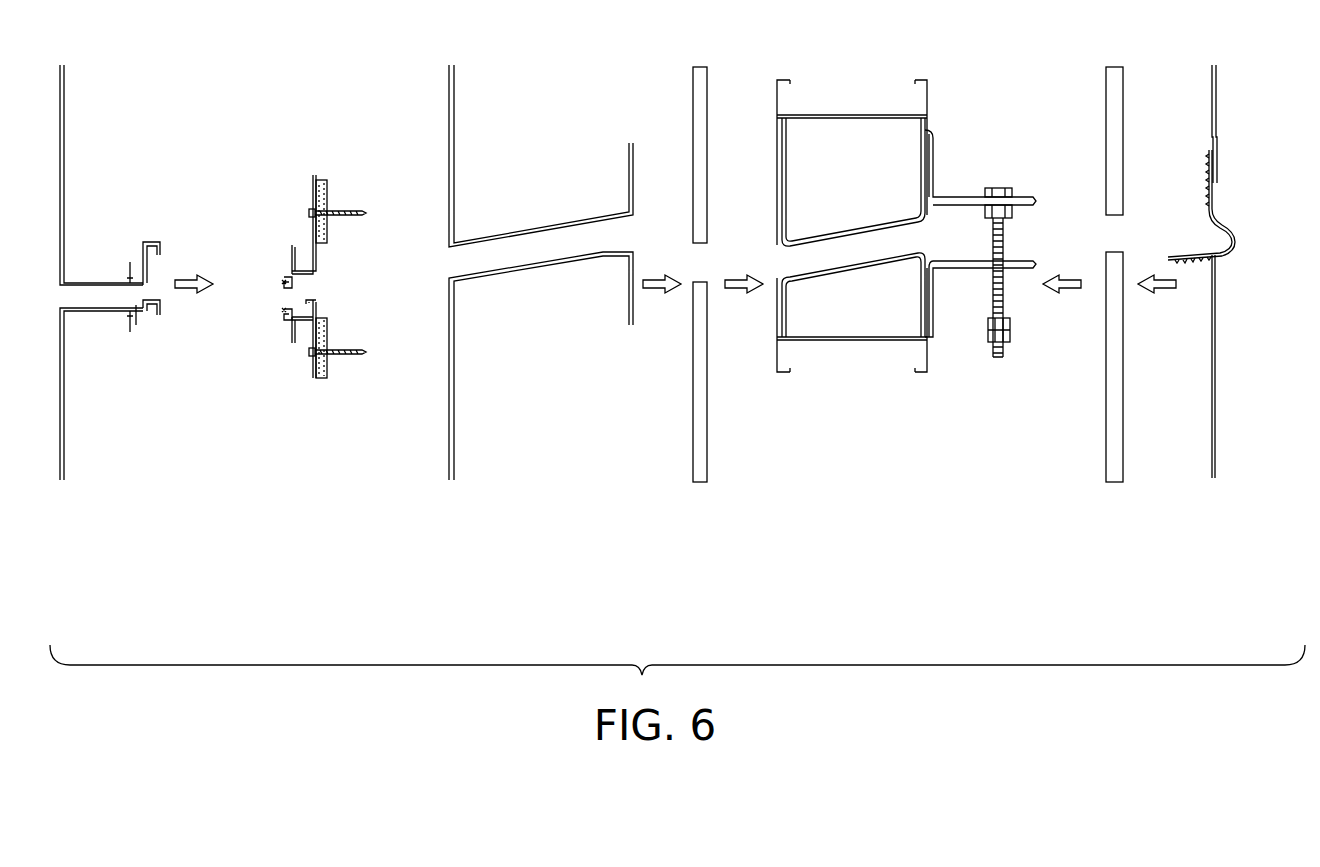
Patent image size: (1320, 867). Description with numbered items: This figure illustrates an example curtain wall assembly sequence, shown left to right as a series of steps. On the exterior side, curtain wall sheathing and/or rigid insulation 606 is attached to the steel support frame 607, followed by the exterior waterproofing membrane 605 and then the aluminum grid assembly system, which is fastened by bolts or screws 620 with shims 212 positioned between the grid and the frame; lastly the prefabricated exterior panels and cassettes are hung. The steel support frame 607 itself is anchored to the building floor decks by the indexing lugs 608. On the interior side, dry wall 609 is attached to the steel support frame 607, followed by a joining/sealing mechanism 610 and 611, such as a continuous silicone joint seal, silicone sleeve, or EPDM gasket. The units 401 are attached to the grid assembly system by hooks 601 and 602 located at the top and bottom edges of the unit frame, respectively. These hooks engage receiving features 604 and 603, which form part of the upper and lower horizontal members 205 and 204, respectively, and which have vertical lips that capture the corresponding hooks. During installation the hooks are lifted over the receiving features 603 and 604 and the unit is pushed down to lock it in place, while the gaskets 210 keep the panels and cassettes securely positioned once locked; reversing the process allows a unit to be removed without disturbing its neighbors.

The units 401 is at (65, 118).
The hook 601 is at (158, 318).
The hook 602 is at (151, 238).
The receiving feature 603 is at (291, 250).
The receiving feature 604 is at (320, 303).
The exterior waterproofing membrane 605 is at (545, 240).
The curtain wall sheathing and/or rigid insulation 606 is at (698, 485).
The steel support frame 607 is at (847, 125).
The indexing lugs 608 is at (998, 348).
The dry wall 609 is at (1115, 485).
The joining/sealing mechanism 610 is at (1232, 237).
The joining/sealing mechanism 611 is at (1217, 95).
The lower horizontal member 204 is at (313, 183).
The upper horizontal member 205 is at (313, 364).
The gaskets 210 is at (284, 280).
The shims 212 is at (316, 178).
The bolts or screws 620 is at (345, 218).